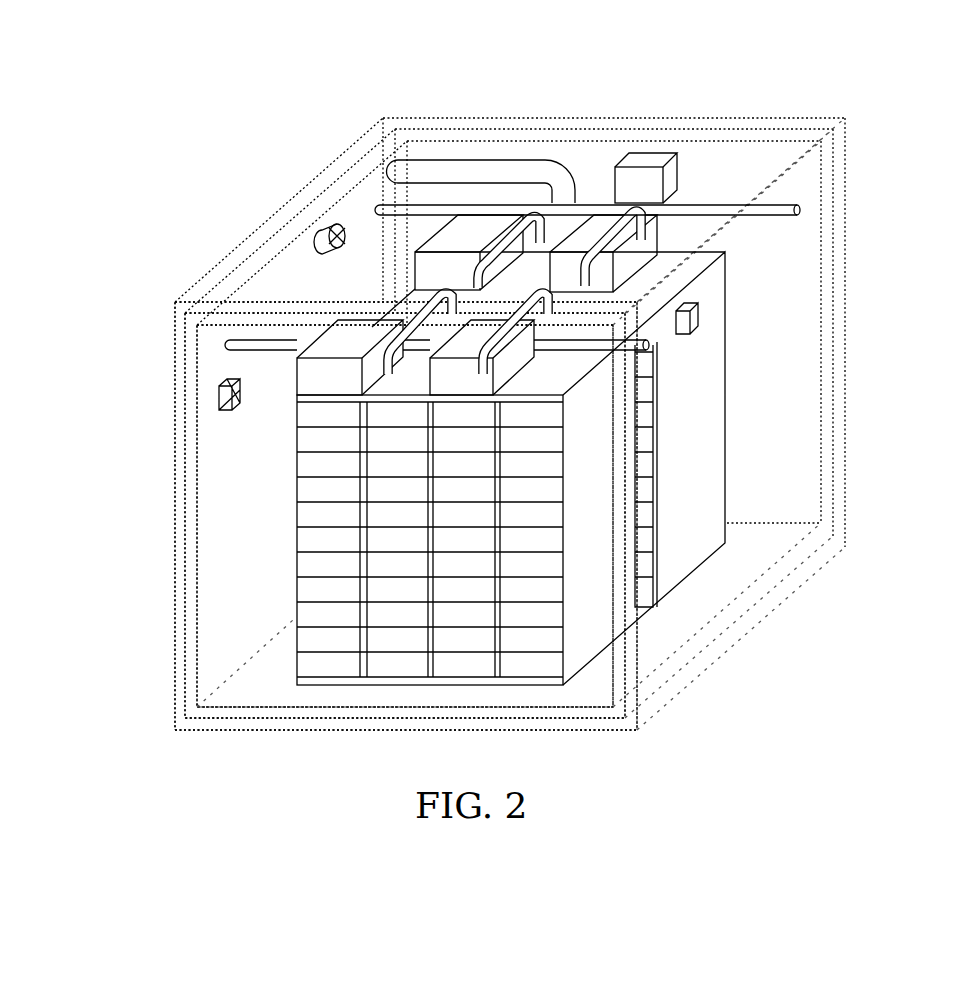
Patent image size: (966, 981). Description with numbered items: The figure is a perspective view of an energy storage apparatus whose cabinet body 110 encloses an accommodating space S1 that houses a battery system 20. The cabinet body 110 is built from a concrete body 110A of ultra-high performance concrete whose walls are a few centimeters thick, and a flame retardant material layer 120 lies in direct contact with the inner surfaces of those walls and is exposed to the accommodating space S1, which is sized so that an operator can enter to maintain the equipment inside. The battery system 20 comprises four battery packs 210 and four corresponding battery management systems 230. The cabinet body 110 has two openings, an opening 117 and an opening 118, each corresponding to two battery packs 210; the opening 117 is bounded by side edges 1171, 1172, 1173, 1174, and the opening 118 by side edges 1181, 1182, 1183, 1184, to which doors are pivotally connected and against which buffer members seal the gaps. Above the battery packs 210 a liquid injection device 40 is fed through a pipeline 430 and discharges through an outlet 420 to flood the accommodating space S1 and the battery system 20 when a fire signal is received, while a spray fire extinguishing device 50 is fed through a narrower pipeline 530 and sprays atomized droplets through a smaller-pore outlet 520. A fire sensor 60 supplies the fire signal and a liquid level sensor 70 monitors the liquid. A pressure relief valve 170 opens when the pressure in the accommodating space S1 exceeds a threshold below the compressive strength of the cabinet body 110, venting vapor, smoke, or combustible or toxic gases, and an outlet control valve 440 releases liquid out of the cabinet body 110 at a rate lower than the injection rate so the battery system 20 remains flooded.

The battery system 20 is at (284, 486).
The liquid injection device 40 is at (504, 154).
The spray fire extinguishing device 50 is at (703, 200).
The fire sensor 60 is at (702, 318).
The liquid level sensor 70 is at (658, 165).
The cabinet body 110 is at (58, 456).
The concrete body 110A is at (182, 486).
The opening 117 is at (244, 700).
The opening 118 is at (762, 153).
The flame retardant material layer 120 is at (186, 456).
The pressure relief valve 170 is at (330, 226).
The battery pack 210 is at (310, 520).
The battery management system 230 is at (310, 372).
The outlet 420 is at (555, 236).
The pipeline 430 is at (473, 162).
The outlet control valve 440 is at (220, 397).
The outlet 520 is at (590, 256).
The pipeline 530 is at (424, 212).
The side edge 1171 is at (210, 675).
The side edge 1172 is at (652, 690).
The side edge 1173 is at (168, 323).
The side edge 1174 is at (216, 722).
The side edge 1181 is at (410, 116).
The side edge 1182 is at (805, 250).
The side edge 1183 is at (752, 148).
The side edge 1184 is at (792, 492).
The accommodating space S1 is at (243, 628).